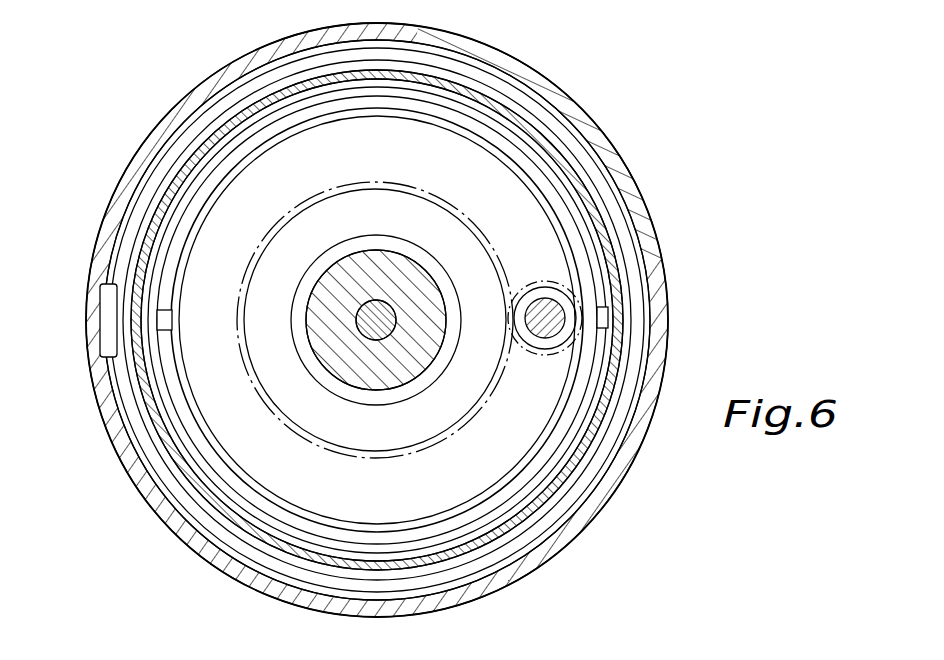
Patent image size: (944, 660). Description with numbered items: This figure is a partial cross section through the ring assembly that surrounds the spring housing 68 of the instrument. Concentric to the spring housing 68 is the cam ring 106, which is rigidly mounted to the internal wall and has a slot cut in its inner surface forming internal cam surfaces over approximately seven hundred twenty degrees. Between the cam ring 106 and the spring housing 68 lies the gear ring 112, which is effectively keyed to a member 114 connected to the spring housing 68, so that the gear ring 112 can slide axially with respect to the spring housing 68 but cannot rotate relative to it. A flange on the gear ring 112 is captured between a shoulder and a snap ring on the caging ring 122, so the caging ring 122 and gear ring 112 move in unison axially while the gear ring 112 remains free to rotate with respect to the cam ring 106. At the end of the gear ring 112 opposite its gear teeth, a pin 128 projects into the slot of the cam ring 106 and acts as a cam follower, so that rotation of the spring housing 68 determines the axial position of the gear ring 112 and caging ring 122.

The spring housing 68 is at (377, 320).
The cam ring 106 is at (170, 197).
The gear ring 112 is at (240, 150).
The member 114 is at (163, 323).
The caging ring 122 is at (125, 248).
The pin 128 is at (105, 300).